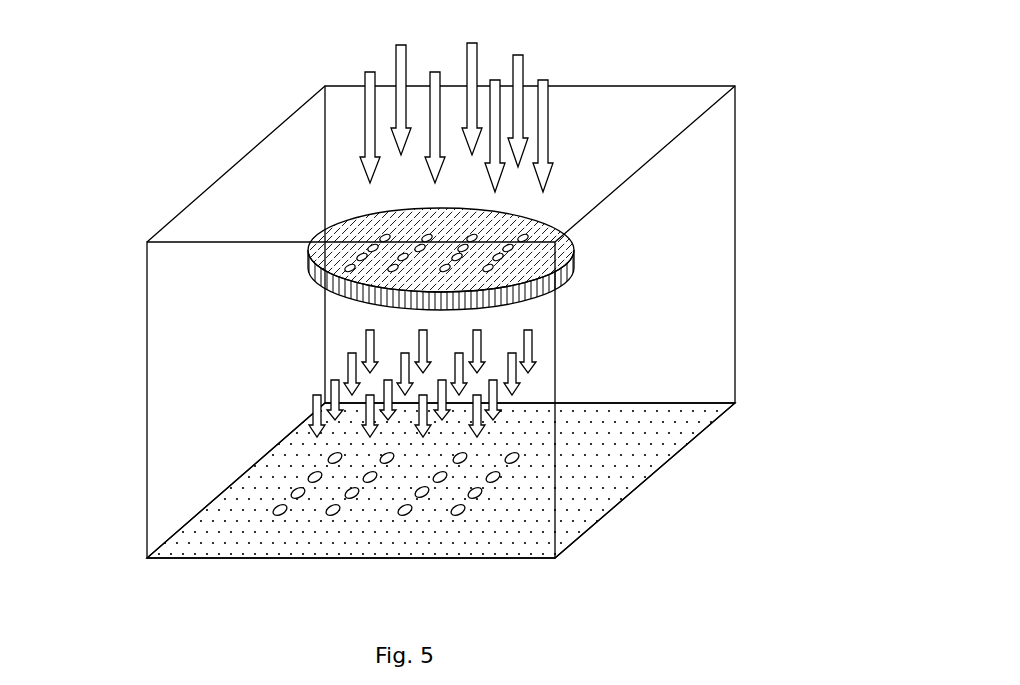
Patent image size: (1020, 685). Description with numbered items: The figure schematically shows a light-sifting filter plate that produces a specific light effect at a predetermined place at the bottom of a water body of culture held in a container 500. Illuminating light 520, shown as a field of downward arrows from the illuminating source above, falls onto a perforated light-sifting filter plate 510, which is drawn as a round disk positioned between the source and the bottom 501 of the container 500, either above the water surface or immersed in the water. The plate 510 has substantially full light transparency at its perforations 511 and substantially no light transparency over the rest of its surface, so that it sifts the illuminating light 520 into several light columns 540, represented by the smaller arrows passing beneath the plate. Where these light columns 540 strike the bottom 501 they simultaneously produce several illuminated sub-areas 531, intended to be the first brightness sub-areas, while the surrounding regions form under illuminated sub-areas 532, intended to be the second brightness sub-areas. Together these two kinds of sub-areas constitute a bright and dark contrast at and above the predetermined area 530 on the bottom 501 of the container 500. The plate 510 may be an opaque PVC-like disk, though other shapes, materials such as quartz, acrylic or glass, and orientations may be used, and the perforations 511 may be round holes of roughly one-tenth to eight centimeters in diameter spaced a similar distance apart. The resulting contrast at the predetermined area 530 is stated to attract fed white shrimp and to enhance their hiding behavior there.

The container 500 is at (253, 149).
The bottom 501 is at (217, 523).
The light-sifting filter plate 510 is at (555, 278).
The perforations 511 is at (553, 237).
The illuminating light 520 is at (443, 63).
The predetermined area 530 is at (501, 551).
The illuminated sub-areas 531 is at (518, 455).
The under illuminated sub-areas 532 is at (420, 507).
The light columns 540 is at (520, 379).